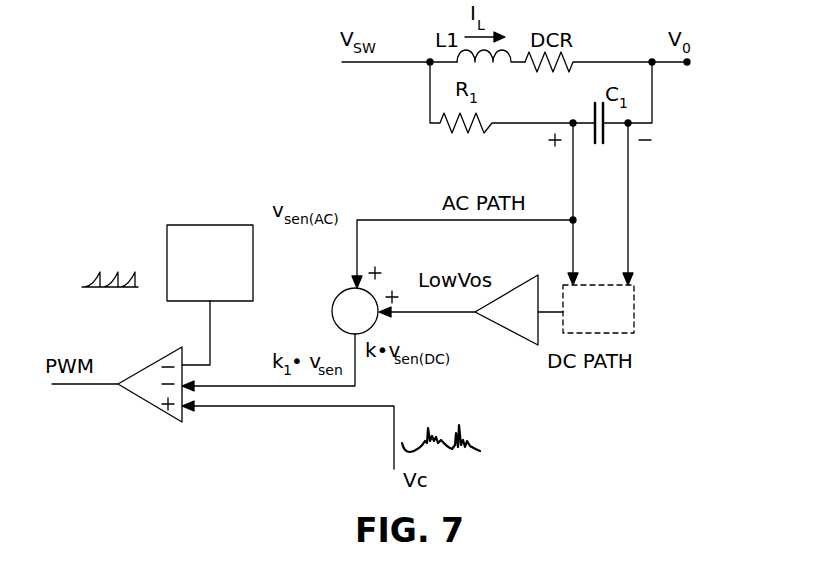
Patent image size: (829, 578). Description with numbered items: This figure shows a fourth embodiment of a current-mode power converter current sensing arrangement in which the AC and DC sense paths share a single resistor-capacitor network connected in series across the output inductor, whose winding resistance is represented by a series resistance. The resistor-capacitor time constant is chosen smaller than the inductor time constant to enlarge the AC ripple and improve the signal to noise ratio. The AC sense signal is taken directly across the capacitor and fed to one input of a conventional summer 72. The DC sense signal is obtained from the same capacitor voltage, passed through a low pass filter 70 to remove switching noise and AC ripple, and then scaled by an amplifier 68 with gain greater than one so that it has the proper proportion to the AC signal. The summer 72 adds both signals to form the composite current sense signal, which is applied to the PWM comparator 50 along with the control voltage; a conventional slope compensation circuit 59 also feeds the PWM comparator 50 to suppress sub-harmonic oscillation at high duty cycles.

The PWM comparator 50 is at (155, 410).
The slope compensation circuit 59 is at (167, 252).
The amplifier 68 is at (516, 338).
The low pass filter 70 is at (634, 305).
The summer 72 is at (331, 316).